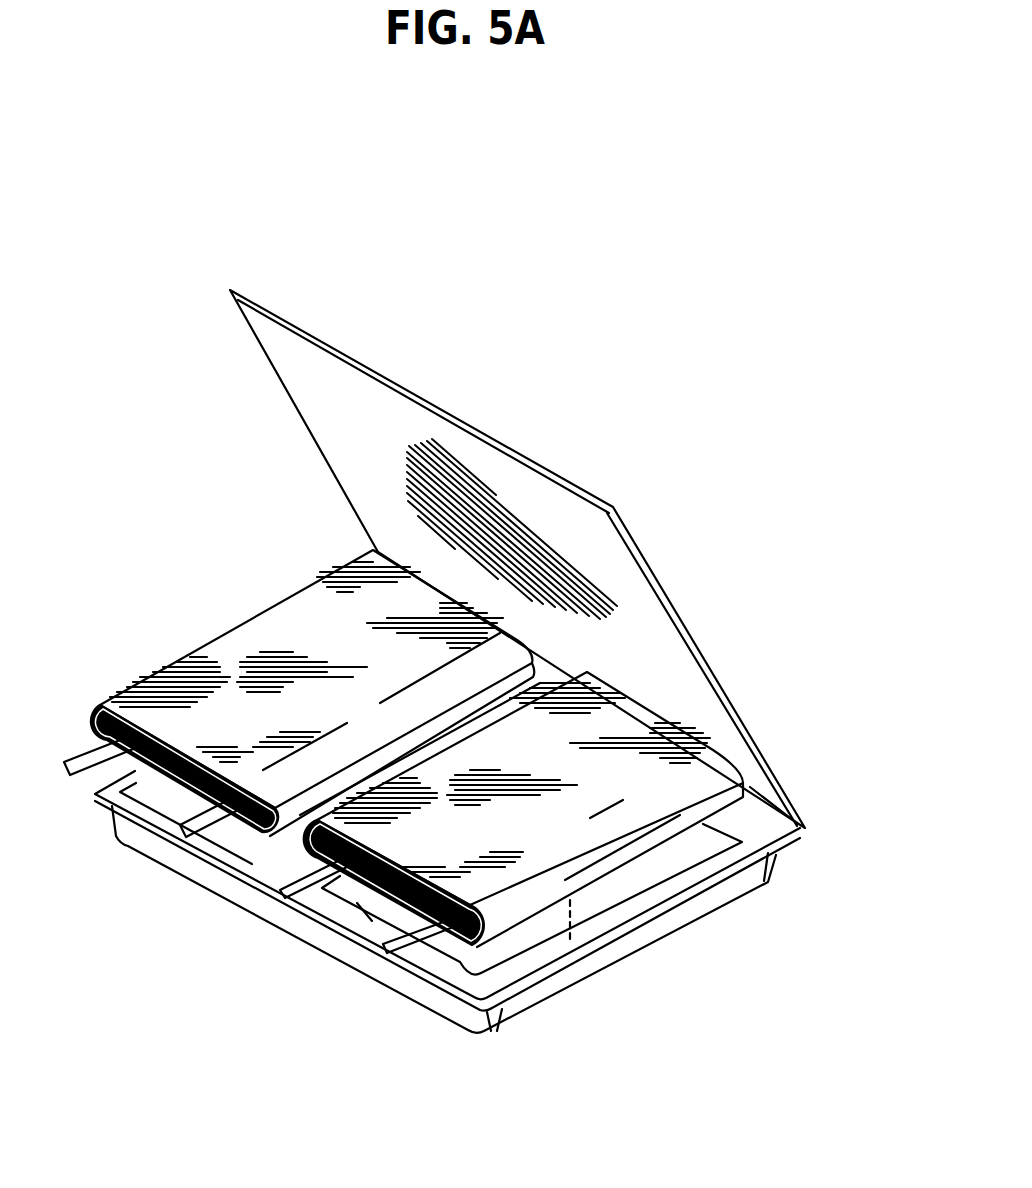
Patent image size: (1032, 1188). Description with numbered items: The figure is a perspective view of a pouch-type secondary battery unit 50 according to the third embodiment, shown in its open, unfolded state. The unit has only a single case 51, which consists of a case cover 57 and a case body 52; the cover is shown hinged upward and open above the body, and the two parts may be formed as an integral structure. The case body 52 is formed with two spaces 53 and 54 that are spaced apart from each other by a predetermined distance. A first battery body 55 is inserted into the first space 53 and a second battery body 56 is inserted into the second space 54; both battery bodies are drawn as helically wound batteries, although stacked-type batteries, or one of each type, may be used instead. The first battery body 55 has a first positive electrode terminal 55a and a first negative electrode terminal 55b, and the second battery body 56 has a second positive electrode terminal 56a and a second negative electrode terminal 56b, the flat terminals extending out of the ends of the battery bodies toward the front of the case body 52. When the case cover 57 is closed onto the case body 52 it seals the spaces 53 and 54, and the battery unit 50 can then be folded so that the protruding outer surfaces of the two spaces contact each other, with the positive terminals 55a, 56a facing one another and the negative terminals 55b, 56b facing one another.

The pouch-type secondary battery unit 50 is at (201, 230).
The case 51 is at (876, 733).
The case body 52 is at (758, 866).
The space 53 is at (230, 875).
The space 54 is at (453, 975).
The first battery body 55 is at (226, 620).
The first positive electrode terminal 55a is at (73, 774).
The first negative electrode terminal 55b is at (178, 842).
The second battery body 56 is at (610, 886).
The second positive electrode terminal 56a is at (392, 953).
The second negative electrode terminal 56b is at (278, 898).
The case cover 57 is at (758, 745).